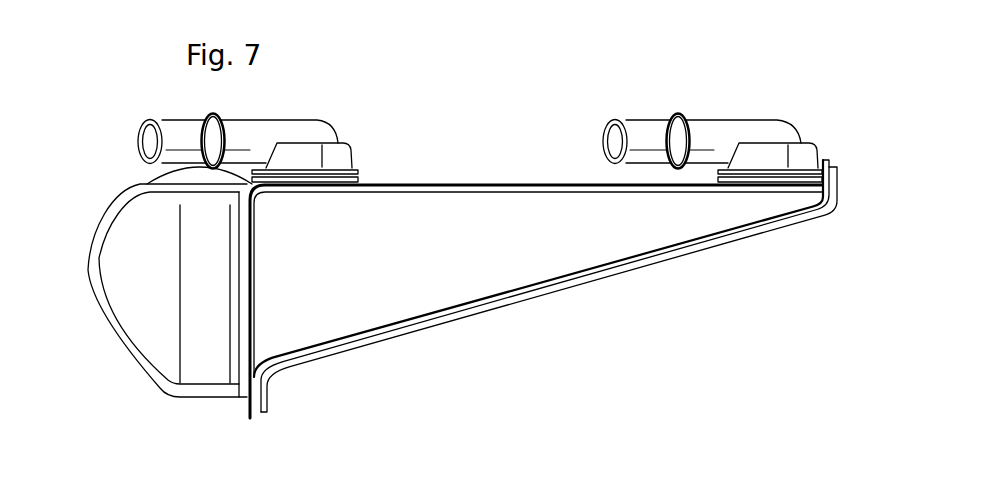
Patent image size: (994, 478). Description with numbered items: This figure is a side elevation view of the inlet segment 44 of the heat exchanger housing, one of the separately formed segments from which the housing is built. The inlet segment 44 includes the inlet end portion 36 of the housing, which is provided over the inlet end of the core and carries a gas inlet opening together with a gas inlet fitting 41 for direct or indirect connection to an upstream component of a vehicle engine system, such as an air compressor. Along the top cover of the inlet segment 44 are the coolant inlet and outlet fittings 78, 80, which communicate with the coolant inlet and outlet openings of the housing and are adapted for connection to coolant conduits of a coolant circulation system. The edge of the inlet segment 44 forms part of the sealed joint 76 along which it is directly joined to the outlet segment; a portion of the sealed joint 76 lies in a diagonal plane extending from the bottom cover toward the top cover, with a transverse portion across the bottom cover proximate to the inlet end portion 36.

The inlet end portion 36 is at (133, 362).
The gas inlet fitting 41 is at (180, 179).
The inlet segment 44 is at (476, 183).
The sealed joint 76 is at (585, 283).
The coolant inlet fitting 78 is at (780, 131).
The coolant outlet fitting 80 is at (315, 127).